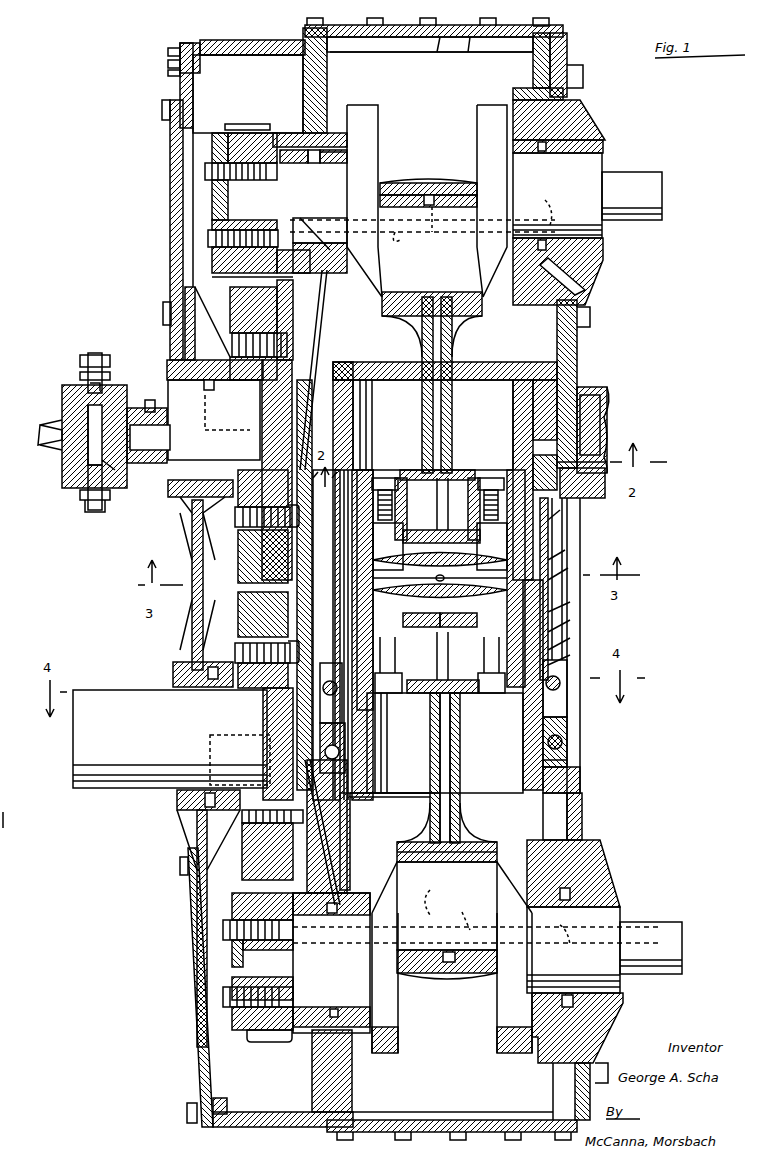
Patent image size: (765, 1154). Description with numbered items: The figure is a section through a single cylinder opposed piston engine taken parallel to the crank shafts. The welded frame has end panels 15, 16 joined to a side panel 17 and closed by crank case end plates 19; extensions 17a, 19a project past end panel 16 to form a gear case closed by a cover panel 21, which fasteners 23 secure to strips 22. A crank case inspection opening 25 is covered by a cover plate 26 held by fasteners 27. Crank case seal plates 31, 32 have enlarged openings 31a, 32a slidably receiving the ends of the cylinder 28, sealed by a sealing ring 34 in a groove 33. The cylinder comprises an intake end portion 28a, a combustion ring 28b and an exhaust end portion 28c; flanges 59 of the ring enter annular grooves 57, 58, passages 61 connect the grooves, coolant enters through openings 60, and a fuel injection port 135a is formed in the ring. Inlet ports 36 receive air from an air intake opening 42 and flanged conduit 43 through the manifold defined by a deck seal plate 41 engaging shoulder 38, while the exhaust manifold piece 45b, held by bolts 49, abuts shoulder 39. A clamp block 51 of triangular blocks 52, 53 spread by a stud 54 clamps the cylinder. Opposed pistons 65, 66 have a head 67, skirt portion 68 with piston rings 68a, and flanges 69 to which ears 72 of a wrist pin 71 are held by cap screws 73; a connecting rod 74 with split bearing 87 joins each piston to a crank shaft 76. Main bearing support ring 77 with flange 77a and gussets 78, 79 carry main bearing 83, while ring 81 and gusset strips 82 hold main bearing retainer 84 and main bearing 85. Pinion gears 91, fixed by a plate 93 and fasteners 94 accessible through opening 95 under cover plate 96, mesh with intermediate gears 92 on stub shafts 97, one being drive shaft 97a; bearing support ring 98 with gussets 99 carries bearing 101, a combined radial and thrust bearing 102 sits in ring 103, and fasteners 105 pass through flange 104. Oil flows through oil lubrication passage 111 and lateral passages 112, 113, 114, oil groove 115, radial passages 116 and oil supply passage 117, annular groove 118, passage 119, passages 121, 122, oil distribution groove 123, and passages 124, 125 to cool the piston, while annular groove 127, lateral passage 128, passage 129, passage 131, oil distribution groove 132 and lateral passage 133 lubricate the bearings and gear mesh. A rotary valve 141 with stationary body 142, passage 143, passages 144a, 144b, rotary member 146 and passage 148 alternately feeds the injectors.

The end panel 15 is at (567, 55).
The end panel 16 is at (290, 85).
The side panel 17 is at (460, 62).
The extension of side panel 17a is at (200, 88).
The crank case end plate 19 is at (345, 10).
The extension of crank case end plate 19a is at (240, 40).
The cover panel 21 is at (185, 320).
The strip 22 is at (200, 42).
The fastener 23 is at (168, 63).
The crank case inspection opening 25 is at (395, 40).
The crank case cover plate 26 is at (420, 50).
The fastener 27 is at (513, 14).
The cylinder 28 is at (552, 540).
The intake end portion 28a is at (560, 510).
The combustion ring 28b is at (565, 550).
The exhaust end portion 28c is at (570, 638).
The crank case seal plate 31 is at (575, 360).
The enlarged opening 31a is at (340, 362).
The crank case seal plate 32 is at (565, 780).
The enlarged opening 32a is at (550, 793).
The groove 33 is at (333, 405).
The sealing ring 34 is at (530, 365).
The inlet port 36 is at (380, 430).
The shoulder 38 is at (545, 468).
The shoulder 39 is at (570, 655).
The deck seal plate 41 is at (565, 470).
The air intake opening 42 is at (585, 410).
The flanged conduit 43 is at (590, 395).
The exhaust manifold piece 45b is at (560, 705).
The bolt 49 is at (560, 680).
The clamp block 51 is at (568, 750).
The triangular block 52 is at (527, 740).
The triangular block 53 is at (567, 760).
The stud 54 is at (560, 730).
The annular groove 57 is at (330, 530).
The annular groove 58 is at (345, 640).
The annular flange 59 is at (570, 602).
The opening 60 is at (570, 620).
The passage 61 is at (568, 568).
The piston 65 is at (507, 480).
The piston 66 is at (505, 700).
The head 67 is at (495, 540).
The skirt portion 68 is at (378, 545).
The piston ring 68a is at (340, 630).
The flange 69 is at (400, 520).
The wrist pin 71 is at (385, 478).
The ear 72 is at (385, 490).
The cap screw 73 is at (488, 478).
The connecting rod 74 is at (452, 412).
The crank shaft 76 is at (605, 160).
The main bearing support ring 77 is at (330, 130).
The inwardly extending flange 77a is at (285, 165).
The gusset 78 is at (327, 72).
The gusset 79 is at (315, 330).
The main bearing support ring 81 is at (555, 94).
The gusset strip 82 is at (550, 40).
The main bearing 83 is at (337, 163).
The main bearing retainer 84 is at (580, 115).
The main bearing 85 is at (545, 152).
The split bearing 87 is at (390, 300).
The pinion gear 91 is at (250, 128).
The intermediate gear 92 is at (245, 575).
The plate 93 is at (220, 190).
The fastener 94 is at (210, 170).
The opening 95 is at (185, 255).
The cover plate 96 is at (170, 220).
The stub shaft 97 is at (175, 478).
The drive shaft 97a is at (138, 700).
The bearing support ring 98 is at (190, 520).
The gusset 99 is at (175, 350).
The bearing 101 is at (185, 505).
The combined radial and thrust bearing 102 is at (275, 410).
The ring 103 is at (262, 400).
The flange 104 is at (240, 310).
The fastener 105 is at (245, 527).
The oil lubrication passage 111 is at (424, 573).
The lateral passage 112 is at (327, 219).
The lateral passage 113 is at (461, 568).
The lateral passage 114 is at (582, 935).
The oil groove 115 is at (545, 160).
The radial passage 116 is at (525, 300).
The oil supply passage 117 is at (603, 265).
The annular groove 118 is at (433, 207).
The passage 119 is at (440, 300).
The passage 121 is at (452, 345).
The passage 122 is at (440, 470).
The oil distribution groove 123 is at (443, 490).
The passage 124 is at (430, 627).
The passage 125 is at (450, 627).
The annular groove 127 is at (314, 163).
The lateral passage 128 is at (325, 273).
The passage 129 is at (320, 313).
The passage 131 is at (245, 440).
The oil distribution groove 132 is at (200, 392).
The lateral passage 133 is at (300, 212).
The fuel injection port 135a is at (445, 582).
The rotary valve 141 is at (70, 377).
The stationary body 142 is at (88, 490).
The passage 143 is at (55, 430).
The passage 144a is at (95, 352).
The passage 144b is at (115, 470).
The rotary member 146 is at (140, 410).
The passage 148 is at (88, 455).